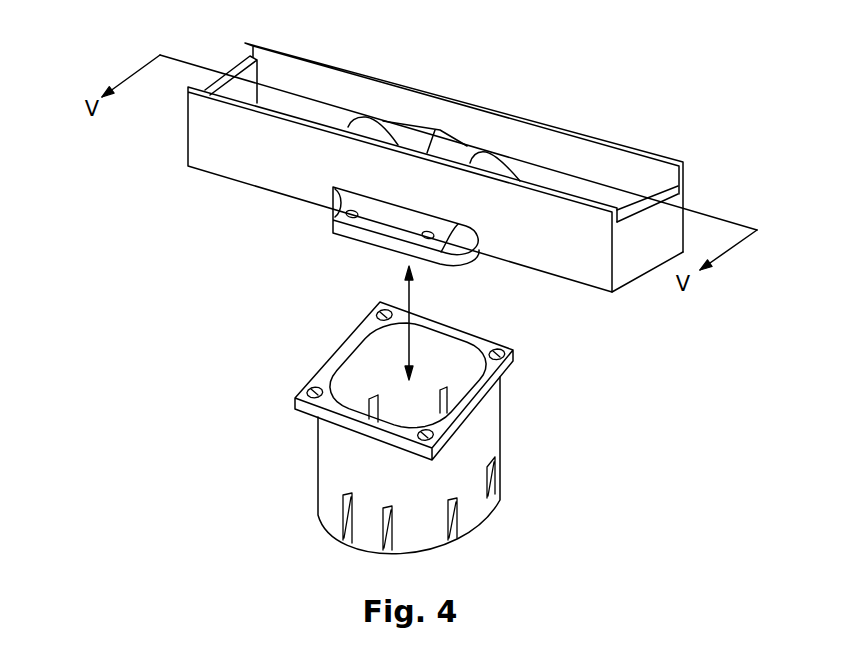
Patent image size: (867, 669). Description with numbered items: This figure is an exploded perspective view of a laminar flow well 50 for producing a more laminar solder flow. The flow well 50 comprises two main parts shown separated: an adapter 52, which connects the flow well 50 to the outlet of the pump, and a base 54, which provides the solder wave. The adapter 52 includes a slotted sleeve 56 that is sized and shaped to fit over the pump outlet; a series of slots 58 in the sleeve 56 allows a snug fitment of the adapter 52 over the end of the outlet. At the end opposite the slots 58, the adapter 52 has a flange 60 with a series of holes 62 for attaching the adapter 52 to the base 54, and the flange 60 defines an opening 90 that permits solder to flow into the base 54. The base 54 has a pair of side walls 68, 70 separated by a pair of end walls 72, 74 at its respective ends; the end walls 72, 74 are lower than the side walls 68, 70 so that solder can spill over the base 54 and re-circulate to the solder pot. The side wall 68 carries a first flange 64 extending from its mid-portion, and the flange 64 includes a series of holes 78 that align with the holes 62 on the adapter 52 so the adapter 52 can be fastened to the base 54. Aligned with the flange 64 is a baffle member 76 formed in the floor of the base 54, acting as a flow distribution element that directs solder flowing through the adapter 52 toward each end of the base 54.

The flow well 50 is at (262, 342).
The adapter 52 is at (515, 440).
The base 54 is at (625, 310).
The slotted sleeve 56 is at (494, 412).
The slots 58 is at (493, 498).
The flange 60 is at (487, 343).
The holes 62 is at (501, 356).
The first flange 64 is at (462, 237).
The side wall 68 is at (542, 263).
The side wall 70 is at (598, 140).
The end wall 72 is at (670, 222).
The end wall 74 is at (240, 62).
The baffle member 76 is at (448, 156).
The holes 78 is at (343, 217).
The opening 90 is at (432, 345).